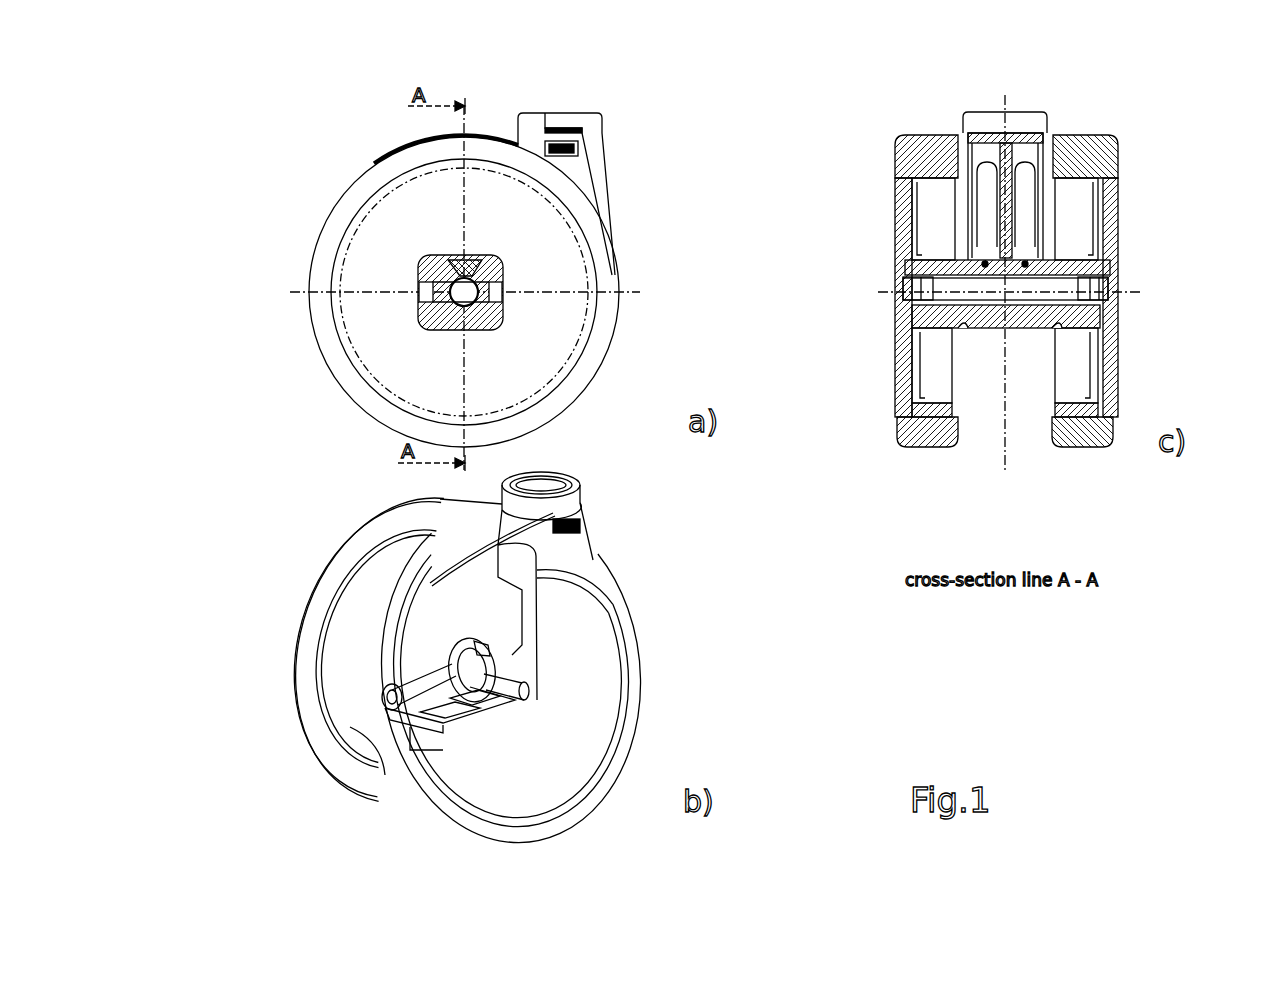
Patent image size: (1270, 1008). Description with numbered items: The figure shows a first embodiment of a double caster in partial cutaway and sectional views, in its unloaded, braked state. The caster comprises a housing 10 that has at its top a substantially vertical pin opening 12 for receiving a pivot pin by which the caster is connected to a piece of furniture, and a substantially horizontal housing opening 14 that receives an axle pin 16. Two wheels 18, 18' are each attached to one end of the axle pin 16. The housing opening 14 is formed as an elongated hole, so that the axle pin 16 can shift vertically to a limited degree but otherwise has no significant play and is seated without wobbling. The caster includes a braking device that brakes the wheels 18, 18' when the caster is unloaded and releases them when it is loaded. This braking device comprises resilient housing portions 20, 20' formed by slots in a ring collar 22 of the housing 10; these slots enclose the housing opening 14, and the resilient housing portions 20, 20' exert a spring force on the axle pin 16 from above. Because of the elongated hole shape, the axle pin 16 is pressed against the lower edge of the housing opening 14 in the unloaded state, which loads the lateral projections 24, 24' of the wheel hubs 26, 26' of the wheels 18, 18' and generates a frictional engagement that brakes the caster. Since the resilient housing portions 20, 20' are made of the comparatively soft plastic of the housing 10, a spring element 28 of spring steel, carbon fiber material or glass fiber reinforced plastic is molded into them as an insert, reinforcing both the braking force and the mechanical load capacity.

The housing 10 is at (577, 182).
The pin opening 12 is at (576, 480).
The housing opening 14 is at (418, 314).
The axle pin 16 is at (500, 303).
The wheel 18 is at (736, 489).
The wheel 18' is at (590, 468).
The resilient housing portion 20 is at (704, 442).
The resilient housing portion 20' is at (886, 248).
The ring collar 22 is at (500, 280).
The lateral projection 24 is at (1064, 425).
The lateral projection 24' is at (982, 434).
The wheel hub 26 is at (1147, 307).
The wheel hub 26' is at (861, 285).
The spring element 28 is at (460, 258).